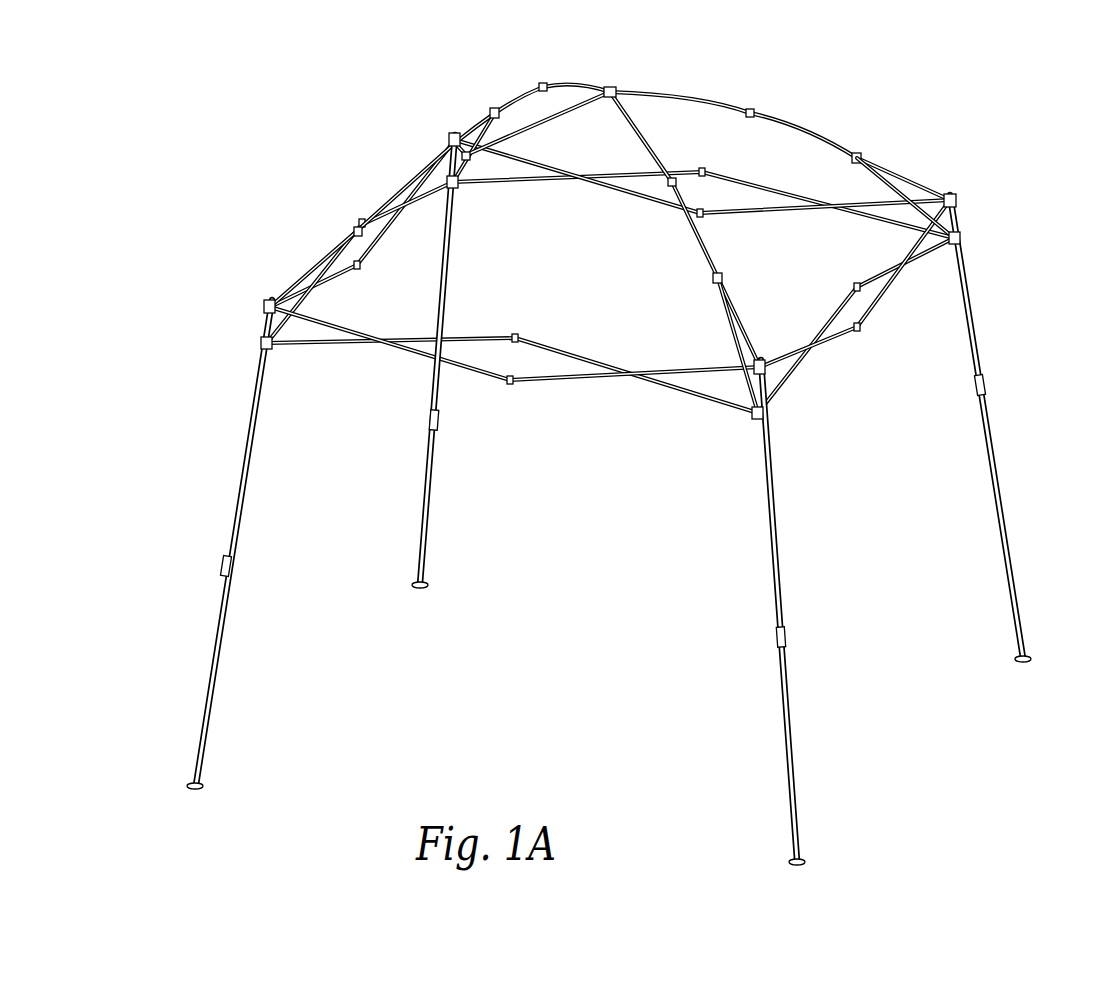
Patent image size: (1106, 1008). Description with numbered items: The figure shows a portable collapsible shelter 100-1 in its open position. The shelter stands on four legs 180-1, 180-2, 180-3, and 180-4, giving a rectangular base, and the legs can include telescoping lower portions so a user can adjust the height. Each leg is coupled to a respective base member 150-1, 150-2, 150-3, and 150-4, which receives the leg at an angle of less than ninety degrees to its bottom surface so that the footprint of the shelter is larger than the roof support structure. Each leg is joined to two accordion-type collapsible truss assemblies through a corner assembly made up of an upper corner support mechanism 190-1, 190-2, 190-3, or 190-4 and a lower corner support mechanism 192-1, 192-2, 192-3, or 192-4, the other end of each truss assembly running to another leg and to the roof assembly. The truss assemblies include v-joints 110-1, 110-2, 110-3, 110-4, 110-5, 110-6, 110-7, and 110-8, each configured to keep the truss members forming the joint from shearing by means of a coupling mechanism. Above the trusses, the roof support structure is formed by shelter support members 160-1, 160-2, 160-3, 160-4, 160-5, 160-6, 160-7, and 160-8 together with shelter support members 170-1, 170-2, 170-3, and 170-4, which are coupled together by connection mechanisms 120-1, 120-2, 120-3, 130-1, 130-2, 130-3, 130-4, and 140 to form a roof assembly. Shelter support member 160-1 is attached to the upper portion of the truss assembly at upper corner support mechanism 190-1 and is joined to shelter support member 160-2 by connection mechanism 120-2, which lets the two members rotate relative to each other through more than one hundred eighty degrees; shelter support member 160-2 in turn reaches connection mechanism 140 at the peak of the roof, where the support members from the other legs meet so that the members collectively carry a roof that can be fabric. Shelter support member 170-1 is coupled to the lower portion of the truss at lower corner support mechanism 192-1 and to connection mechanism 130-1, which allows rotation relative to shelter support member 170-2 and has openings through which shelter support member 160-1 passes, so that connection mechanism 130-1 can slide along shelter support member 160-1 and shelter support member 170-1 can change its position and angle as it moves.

The portable collapsible shelter 100-1 is at (191, 129).
The v-joint 110-1 is at (513, 335).
The v-joint 110-2 is at (511, 384).
The v-joint 110-3 is at (854, 284).
The v-joint 110-4 is at (862, 329).
The v-joint 110-5 is at (706, 171).
The v-joint 110-6 is at (704, 216).
The v-joint 110-7 is at (359, 220).
The v-joint 110-8 is at (359, 264).
The connection mechanism 120-1 is at (462, 154).
The connection mechanism 120-2 is at (761, 113).
The connection mechanism 120-3 is at (542, 84).
The connection mechanism 130-1 is at (718, 279).
The connection mechanism 130-2 is at (864, 152).
The connection mechanism 130-3 is at (494, 108).
The connection mechanism 130-4 is at (353, 237).
The connection mechanism 140 is at (614, 88).
The base member 150-1 is at (788, 859).
The base member 150-2 is at (1015, 657).
The base member 150-3 is at (428, 583).
The base member 150-4 is at (200, 786).
The shelter support member 160-1 is at (694, 233).
The shelter support member 160-2 is at (648, 141).
The shelter support member 160-3 is at (817, 130).
The shelter support member 160-4 is at (700, 99).
The shelter support member 160-5 is at (522, 90).
The shelter support member 160-6 is at (572, 82).
The shelter support member 160-7 is at (323, 260).
The shelter support member 160-8 is at (551, 118).
The shelter support member 170-1 is at (736, 329).
The shelter support member 170-2 is at (884, 192).
The shelter support member 170-3 is at (480, 130).
The shelter support member 170-4 is at (311, 289).
The leg 180-1 is at (789, 722).
The leg 180-2 is at (1017, 566).
The leg 180-3 is at (427, 433).
The leg 180-4 is at (211, 628).
The upper corner support mechanism 190-1 is at (763, 360).
The upper corner support mechanism 190-2 is at (950, 199).
The upper corner support mechanism 190-3 is at (452, 139).
The upper corner support mechanism 190-4 is at (266, 303).
The lower corner support mechanism 192-1 is at (767, 410).
The lower corner support mechanism 192-2 is at (960, 237).
The lower corner support mechanism 192-3 is at (458, 186).
The lower corner support mechanism 192-4 is at (258, 346).